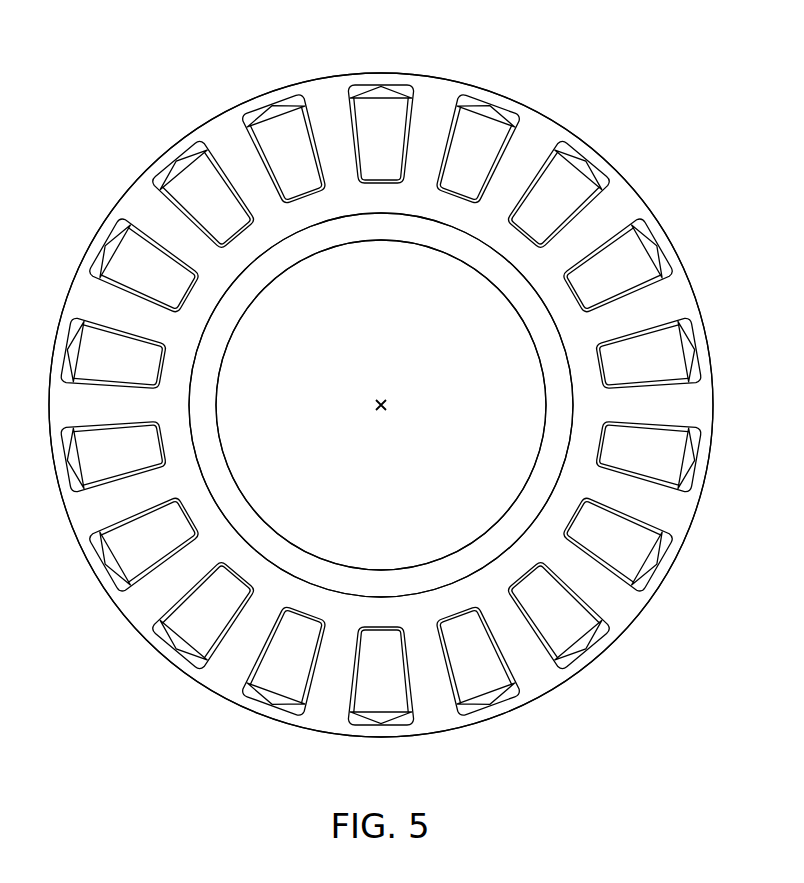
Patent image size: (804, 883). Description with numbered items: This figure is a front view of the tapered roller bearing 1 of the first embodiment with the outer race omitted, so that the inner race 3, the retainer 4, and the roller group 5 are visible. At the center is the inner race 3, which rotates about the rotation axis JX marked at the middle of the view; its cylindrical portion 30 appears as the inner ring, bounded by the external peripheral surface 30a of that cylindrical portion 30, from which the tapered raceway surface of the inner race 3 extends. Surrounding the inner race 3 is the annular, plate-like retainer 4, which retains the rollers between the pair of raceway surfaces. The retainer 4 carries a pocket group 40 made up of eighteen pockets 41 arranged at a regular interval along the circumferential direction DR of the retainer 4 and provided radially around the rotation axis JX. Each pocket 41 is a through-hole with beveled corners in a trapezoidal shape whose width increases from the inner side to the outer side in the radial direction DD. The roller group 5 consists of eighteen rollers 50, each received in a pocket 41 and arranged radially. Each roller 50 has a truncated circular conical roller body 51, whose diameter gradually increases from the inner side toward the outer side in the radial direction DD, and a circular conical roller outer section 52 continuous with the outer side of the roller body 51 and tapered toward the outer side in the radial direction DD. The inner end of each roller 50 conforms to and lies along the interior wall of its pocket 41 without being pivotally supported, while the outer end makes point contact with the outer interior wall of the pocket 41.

The tapered roller bearing 1 is at (660, 91).
The inner race 3 is at (290, 537).
The cylindrical portion 30 is at (380, 569).
The external peripheral surface 30a is at (370, 598).
The retainer 4 is at (391, 71).
The pocket group 40 is at (487, 121).
The pocket 41 is at (473, 97).
The roller group 5 is at (577, 155).
The roller 50 is at (577, 180).
The roller body 51 is at (577, 195).
The roller outer section 52 is at (597, 173).
The rotation axis JX is at (381, 399).
The radial direction DD is at (412, 406).
The circumferential direction DR is at (768, 453).